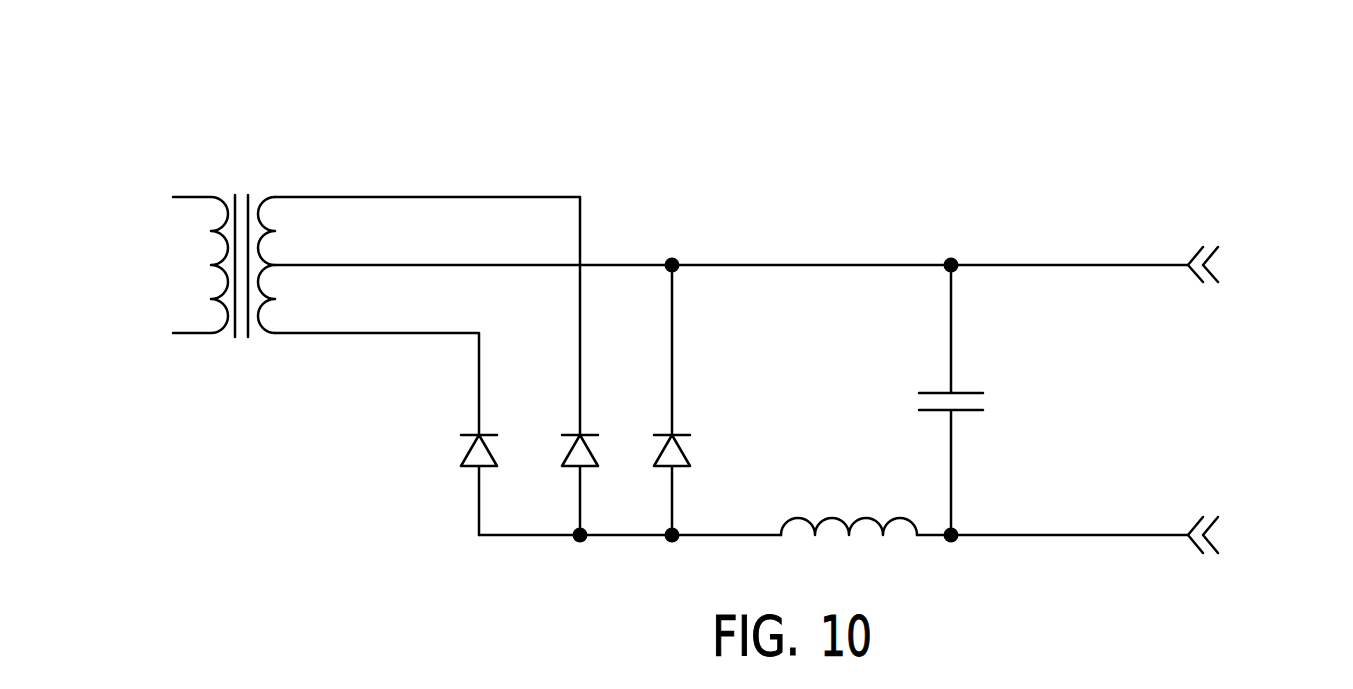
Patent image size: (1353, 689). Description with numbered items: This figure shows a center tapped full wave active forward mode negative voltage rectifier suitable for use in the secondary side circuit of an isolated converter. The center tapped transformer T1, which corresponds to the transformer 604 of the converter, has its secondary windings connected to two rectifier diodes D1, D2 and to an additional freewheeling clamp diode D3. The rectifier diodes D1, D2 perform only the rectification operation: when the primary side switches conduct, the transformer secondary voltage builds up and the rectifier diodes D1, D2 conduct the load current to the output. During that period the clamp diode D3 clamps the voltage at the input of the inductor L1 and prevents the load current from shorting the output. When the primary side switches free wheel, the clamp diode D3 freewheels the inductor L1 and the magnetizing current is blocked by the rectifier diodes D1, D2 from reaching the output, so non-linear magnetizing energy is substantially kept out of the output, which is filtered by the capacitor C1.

The transformer 604 is at (306, 160).
The transformer T1 is at (229, 250).
The rectifier diode D1 is at (494, 468).
The rectifier diode D2 is at (596, 468).
The freewheeling clamp diode D3 is at (689, 468).
The inductor L1 is at (827, 520).
The output capacitor C1 is at (959, 400).